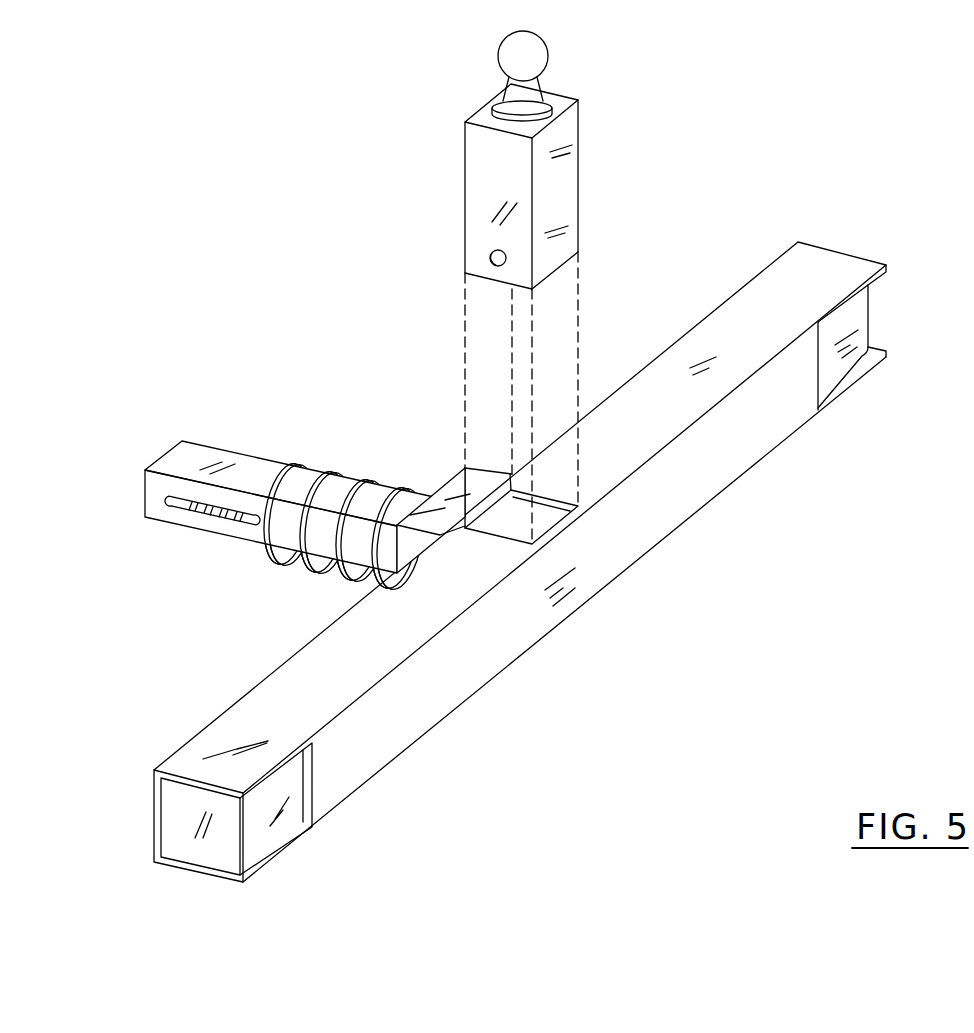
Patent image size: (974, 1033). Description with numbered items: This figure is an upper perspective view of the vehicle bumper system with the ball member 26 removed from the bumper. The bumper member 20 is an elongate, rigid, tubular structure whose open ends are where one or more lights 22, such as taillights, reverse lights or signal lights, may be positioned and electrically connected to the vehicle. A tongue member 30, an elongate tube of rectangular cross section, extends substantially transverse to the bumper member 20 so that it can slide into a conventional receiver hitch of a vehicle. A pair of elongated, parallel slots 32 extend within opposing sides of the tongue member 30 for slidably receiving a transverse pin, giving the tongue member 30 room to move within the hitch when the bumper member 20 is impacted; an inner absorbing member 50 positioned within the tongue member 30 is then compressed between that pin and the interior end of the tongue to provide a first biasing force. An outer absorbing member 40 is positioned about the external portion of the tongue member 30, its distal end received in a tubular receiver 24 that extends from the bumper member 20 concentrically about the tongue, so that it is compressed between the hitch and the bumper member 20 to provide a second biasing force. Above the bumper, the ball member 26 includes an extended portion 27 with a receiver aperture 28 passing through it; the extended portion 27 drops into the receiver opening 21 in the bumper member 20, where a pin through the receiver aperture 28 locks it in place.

The bumper member 20 is at (725, 331).
The receiver opening 21 is at (565, 505).
The lights 22 is at (292, 822).
The tubular receiver 24 is at (450, 488).
The ball member 26 is at (525, 52).
The extended portion 27 is at (567, 188).
The receiver aperture 28 is at (490, 254).
The tongue member 30 is at (247, 461).
The slots 32 is at (172, 509).
The outer absorbing member 40 is at (347, 477).
The inner absorbing member 50 is at (231, 512).